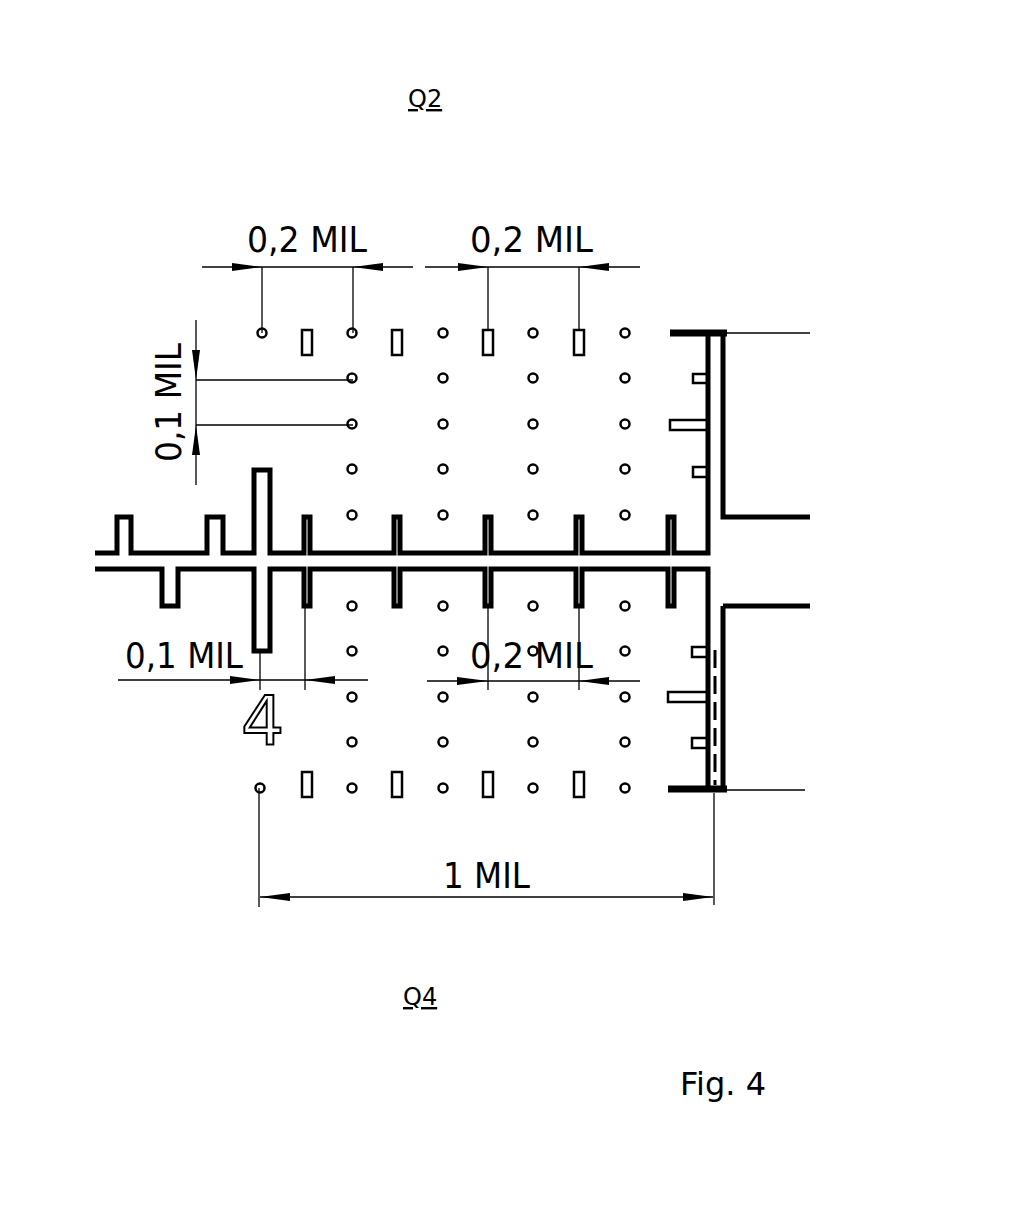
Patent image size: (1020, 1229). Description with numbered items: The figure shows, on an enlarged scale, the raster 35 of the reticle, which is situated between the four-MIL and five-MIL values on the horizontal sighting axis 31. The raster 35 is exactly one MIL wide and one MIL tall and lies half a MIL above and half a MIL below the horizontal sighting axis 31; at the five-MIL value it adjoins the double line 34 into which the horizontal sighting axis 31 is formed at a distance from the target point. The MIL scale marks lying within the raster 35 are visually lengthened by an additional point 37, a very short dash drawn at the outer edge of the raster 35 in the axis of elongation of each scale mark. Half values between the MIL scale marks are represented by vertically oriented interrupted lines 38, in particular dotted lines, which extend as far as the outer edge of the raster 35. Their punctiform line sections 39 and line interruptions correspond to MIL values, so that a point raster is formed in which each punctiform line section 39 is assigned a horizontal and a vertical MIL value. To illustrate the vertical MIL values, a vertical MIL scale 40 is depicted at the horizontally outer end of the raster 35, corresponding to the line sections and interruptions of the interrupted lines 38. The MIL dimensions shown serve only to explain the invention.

The horizontal sighting axis 31 is at (178, 558).
The double line 34 is at (769, 553).
The raster 35 is at (760, 81).
The additional point 37 is at (588, 327).
The interrupted lines 38 is at (631, 349).
The punctiform line section 39 is at (630, 370).
The vertical MIL scale 40 is at (722, 729).